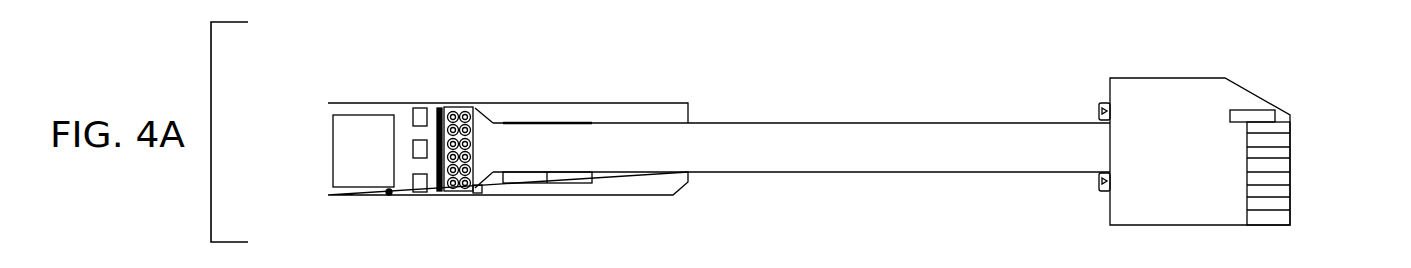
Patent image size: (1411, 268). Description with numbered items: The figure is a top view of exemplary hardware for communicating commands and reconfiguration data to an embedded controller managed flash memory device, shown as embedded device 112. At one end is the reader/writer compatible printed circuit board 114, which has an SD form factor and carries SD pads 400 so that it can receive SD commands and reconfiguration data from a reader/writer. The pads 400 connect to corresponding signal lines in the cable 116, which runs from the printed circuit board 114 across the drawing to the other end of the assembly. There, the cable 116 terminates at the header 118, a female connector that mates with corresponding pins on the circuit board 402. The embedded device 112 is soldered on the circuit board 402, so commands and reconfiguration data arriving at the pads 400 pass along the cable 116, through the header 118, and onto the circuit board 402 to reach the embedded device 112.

The embedded device 112 is at (373, 135).
The reader/writer compatible printed circuit board 114 is at (1185, 77).
The cable 116 is at (880, 122).
The header 118 is at (460, 107).
The SD pads 400 is at (1282, 130).
The circuit board 402 is at (563, 102).